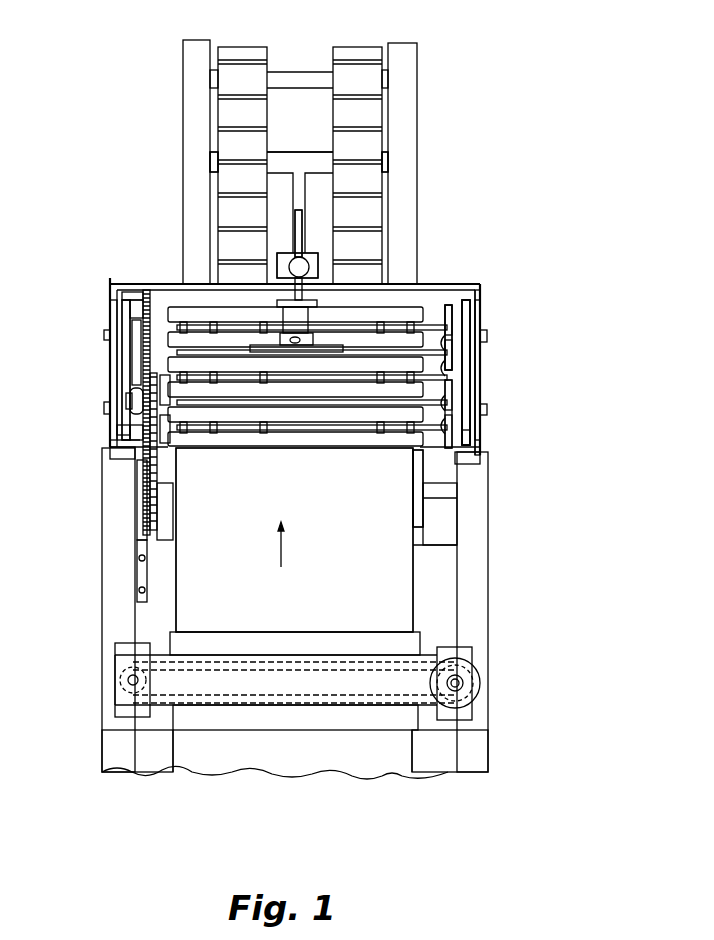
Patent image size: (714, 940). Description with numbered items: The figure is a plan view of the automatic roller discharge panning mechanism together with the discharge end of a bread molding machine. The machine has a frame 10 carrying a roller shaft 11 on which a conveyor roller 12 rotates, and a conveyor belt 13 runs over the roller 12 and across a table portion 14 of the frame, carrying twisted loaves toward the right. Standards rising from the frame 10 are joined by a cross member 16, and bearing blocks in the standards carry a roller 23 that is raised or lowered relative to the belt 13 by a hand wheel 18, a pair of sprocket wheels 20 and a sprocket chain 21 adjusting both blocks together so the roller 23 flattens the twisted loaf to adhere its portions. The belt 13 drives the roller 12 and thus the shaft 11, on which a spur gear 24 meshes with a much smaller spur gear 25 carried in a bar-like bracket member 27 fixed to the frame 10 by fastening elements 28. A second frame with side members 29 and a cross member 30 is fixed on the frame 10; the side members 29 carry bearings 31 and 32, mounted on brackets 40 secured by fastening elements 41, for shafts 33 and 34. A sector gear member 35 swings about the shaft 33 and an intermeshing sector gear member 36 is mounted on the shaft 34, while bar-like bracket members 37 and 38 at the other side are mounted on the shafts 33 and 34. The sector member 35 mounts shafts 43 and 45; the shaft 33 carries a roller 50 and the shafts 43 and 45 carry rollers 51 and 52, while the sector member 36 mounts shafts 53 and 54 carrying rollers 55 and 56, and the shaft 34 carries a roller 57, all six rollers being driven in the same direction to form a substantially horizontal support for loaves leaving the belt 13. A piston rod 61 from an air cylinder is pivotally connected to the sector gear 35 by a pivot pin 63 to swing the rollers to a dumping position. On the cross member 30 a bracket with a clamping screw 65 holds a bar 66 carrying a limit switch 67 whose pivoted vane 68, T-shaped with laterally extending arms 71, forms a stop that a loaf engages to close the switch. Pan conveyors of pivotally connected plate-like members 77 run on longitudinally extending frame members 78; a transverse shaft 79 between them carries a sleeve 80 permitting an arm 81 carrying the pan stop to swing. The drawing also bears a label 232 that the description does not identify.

The frame 10 is at (102, 740).
The roller shaft 11 is at (132, 490).
The conveyor roller 12 is at (420, 518).
The conveyor belt 13 is at (321, 766).
The table portion 14 is at (153, 767).
The cross member 16 is at (267, 652).
The hand wheel 18 is at (478, 692).
The sprocket wheels 20 is at (115, 670).
The sprocket chain 21 is at (340, 662).
The roller 23 is at (223, 634).
The spur gear 24 is at (142, 523).
The spur gear 25 is at (166, 462).
The bar-like bracket member 27 is at (140, 553).
The fastening elements 28 is at (137, 588).
The side members 29 is at (127, 355).
The cross member 30 is at (420, 300).
The bearing 31 is at (125, 430).
The bearing 32 is at (130, 300).
The shaft 33 is at (130, 460).
The shaft 34 is at (455, 315).
The sector gear member 35 is at (145, 381).
The sector gear member 36 is at (146, 290).
The bar-like bracket member 37 is at (487, 400).
The bar-like bracket member 38 is at (470, 354).
The brackets 40 is at (117, 348).
The fastening elements 41 is at (105, 335).
The shaft 43 is at (178, 430).
The shaft 45 is at (205, 425).
The roller 50 is at (232, 436).
The roller 51 is at (275, 410).
The roller 52 is at (346, 387).
The shaft 53 is at (457, 355).
The shaft 54 is at (457, 323).
The roller 55 is at (215, 347).
The roller 56 is at (401, 340).
The roller 57 is at (386, 311).
The piston rod 61 is at (135, 392).
The pivot pin 63 is at (130, 399).
The clamping screw 65 is at (295, 260).
The bar 66 is at (322, 232).
The limit switch 67 is at (359, 302).
The vane 68 is at (275, 323).
The laterally extending arms 71 is at (263, 335).
The plate-like members 77 is at (345, 52).
The longitudinally extending frame members 78 is at (194, 70).
The transverse shaft 79 is at (215, 162).
The sleeve 80 is at (276, 155).
The arm 81 is at (294, 197).
The side plate 232 is at (470, 312).